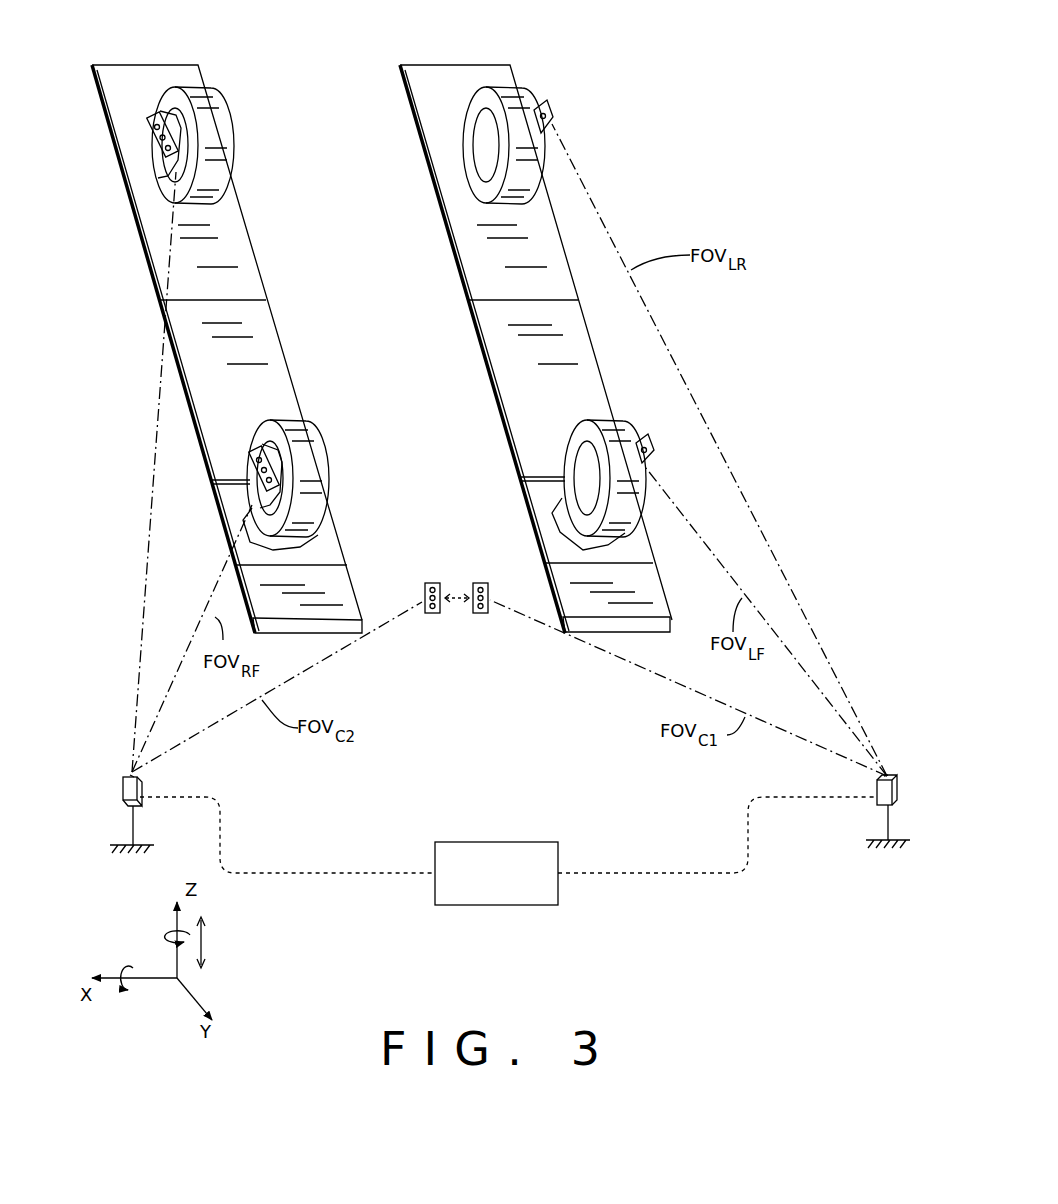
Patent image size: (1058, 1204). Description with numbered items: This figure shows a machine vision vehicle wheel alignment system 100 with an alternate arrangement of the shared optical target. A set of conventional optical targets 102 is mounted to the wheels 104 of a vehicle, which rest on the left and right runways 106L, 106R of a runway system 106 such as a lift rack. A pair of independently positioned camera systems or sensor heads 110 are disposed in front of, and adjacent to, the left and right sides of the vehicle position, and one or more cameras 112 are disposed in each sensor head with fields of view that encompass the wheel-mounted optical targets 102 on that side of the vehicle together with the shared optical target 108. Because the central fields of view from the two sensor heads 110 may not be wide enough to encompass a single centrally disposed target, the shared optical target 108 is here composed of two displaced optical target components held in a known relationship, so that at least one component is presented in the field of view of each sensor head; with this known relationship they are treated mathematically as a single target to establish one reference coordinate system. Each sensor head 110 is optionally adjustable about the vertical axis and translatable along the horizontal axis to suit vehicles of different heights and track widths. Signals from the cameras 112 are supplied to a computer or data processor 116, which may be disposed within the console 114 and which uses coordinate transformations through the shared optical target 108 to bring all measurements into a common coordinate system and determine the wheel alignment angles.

The machine vision vehicle wheel alignment system 100 is at (738, 953).
The optical targets 102 is at (439, 306).
The wheels 104 is at (437, 280).
The runway system 106 is at (392, 82).
The right runway 106R is at (237, 277).
The left runway 106L is at (483, 270).
The shared optical target 108 is at (495, 638).
The camera systems or sensor heads 110 is at (508, 815).
The cameras 112 is at (130, 775).
The console 114 is at (572, 885).
The computer or data processor 116 is at (535, 847).